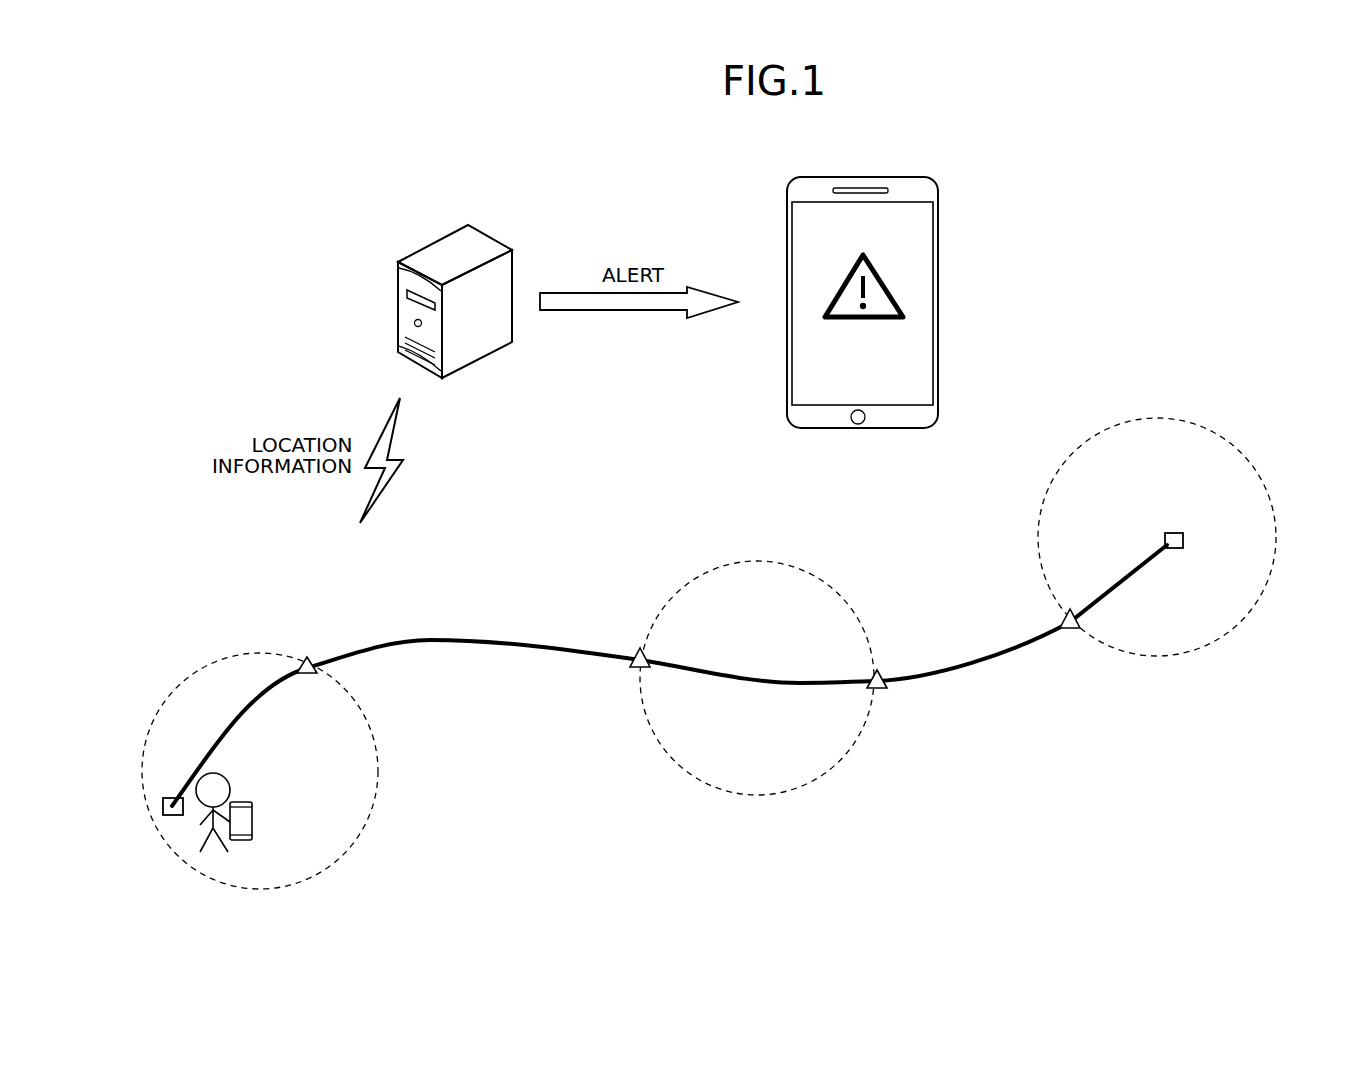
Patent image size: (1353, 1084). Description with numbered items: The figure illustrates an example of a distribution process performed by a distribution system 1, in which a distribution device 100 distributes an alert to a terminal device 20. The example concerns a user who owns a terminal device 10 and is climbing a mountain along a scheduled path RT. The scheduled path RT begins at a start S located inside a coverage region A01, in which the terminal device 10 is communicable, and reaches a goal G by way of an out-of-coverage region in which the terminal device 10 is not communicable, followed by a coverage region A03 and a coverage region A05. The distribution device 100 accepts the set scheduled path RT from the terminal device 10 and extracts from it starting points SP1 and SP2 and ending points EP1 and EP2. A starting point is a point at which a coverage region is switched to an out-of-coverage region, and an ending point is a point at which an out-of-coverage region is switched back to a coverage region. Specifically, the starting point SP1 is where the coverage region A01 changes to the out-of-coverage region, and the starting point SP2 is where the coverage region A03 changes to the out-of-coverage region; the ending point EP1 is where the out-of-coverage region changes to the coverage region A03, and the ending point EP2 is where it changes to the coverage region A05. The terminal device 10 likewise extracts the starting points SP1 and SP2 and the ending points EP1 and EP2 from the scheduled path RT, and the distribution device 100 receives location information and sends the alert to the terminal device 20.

The distribution system 1 is at (1033, 163).
The distribution device 100 is at (485, 231).
The terminal device 20 is at (860, 177).
The terminal device 10 is at (253, 818).
The coverage region A01 is at (210, 657).
The coverage region A03 is at (760, 562).
The coverage region A05 is at (1158, 420).
The scheduled path RT is at (465, 640).
The start S is at (172, 797).
The goal G is at (1174, 533).
The starting point SP1 is at (307, 657).
The starting point SP2 is at (879, 670).
The ending point EP1 is at (637, 650).
The ending point EP2 is at (1071, 630).